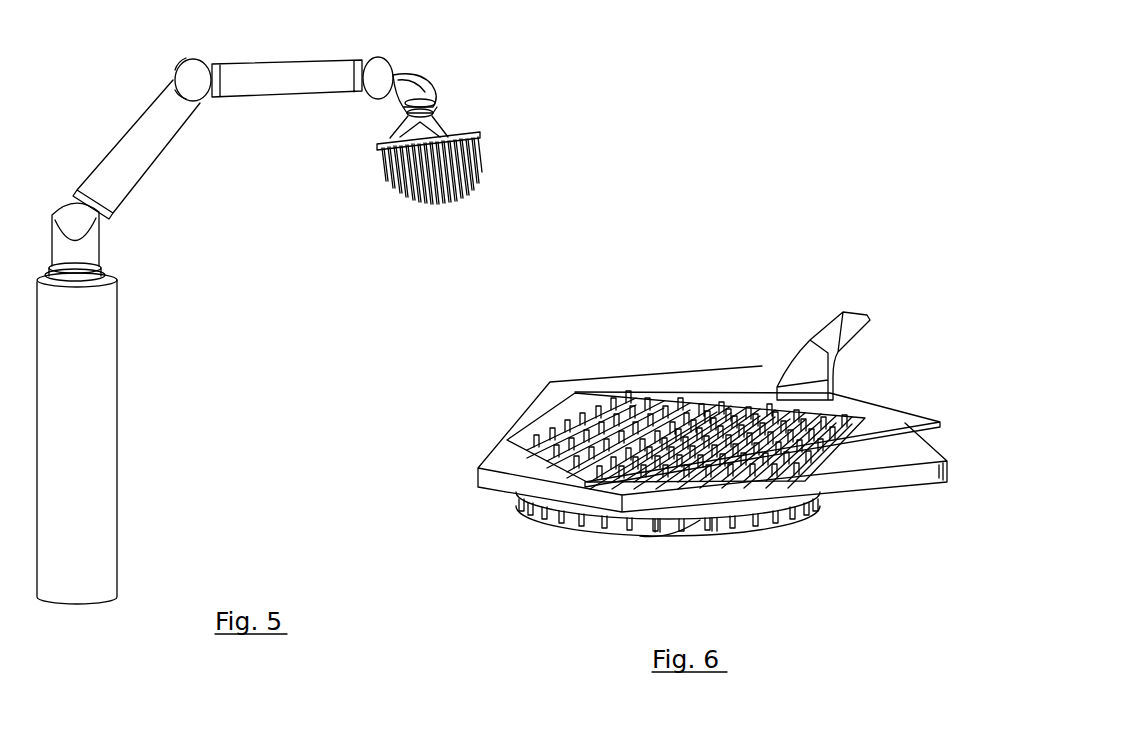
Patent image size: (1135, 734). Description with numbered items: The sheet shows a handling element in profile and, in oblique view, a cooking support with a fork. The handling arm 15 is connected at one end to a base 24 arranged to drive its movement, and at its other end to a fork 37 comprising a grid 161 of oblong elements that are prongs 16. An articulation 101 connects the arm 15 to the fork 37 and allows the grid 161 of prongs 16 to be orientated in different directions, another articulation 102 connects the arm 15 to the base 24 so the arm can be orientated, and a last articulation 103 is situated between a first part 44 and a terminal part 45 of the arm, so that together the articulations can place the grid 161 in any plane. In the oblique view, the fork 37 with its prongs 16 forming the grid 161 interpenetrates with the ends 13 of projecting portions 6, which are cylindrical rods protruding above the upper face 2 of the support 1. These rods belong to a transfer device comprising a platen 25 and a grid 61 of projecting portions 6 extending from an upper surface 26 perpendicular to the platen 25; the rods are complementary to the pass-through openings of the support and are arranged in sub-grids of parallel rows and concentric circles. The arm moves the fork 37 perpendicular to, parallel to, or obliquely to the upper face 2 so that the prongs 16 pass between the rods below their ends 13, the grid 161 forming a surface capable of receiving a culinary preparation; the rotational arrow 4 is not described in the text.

In FIG. 6, the support 1 is at (565, 395).
In FIG. 6, the upper face 2 is at (870, 463).
In FIG. 6, the rotation direction 4 is at (822, 500).
In FIG. 6, the projecting portions 6 is at (717, 515).
In FIG. 6, the grid of projecting portions 61 is at (714, 524).
In FIG. 6, the ends of projecting portions 13 is at (653, 475).
In FIG. 5, the handling arm 15 is at (38, 281).
In FIG. 5, the prongs 16 is at (410, 165).
In FIG. 6, the prongs 16 is at (567, 470).
In FIG. 5, the grid of prongs 161 is at (390, 202).
In FIG. 6, the grid of prongs 161 is at (755, 440).
In FIG. 5, the base 24 is at (77, 447).
In FIG. 6, the platen 25 is at (742, 530).
In FIG. 6, the upper surface 26 is at (748, 508).
In FIG. 5, the fork 37 is at (399, 171).
In FIG. 6, the fork 37 is at (699, 426).
In FIG. 5, the first part 44 is at (139, 143).
In FIG. 5, the terminal part 45 is at (285, 78).
In FIG. 5, the articulation 101 is at (368, 50).
In FIG. 5, the articulation 102 is at (76, 235).
In FIG. 5, the articulation 103 is at (200, 86).